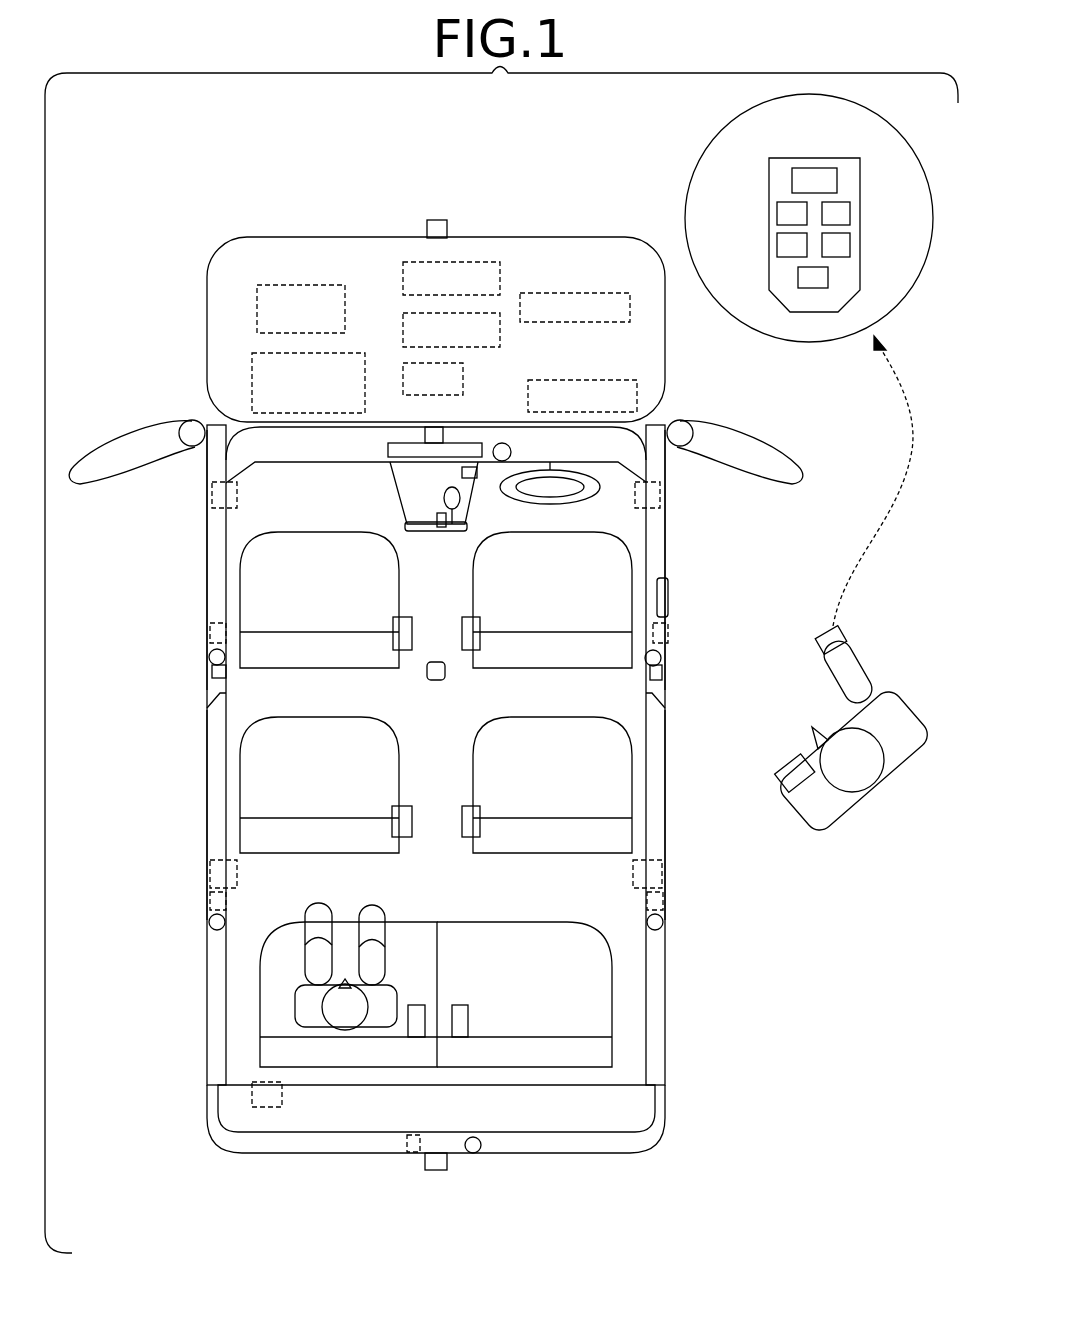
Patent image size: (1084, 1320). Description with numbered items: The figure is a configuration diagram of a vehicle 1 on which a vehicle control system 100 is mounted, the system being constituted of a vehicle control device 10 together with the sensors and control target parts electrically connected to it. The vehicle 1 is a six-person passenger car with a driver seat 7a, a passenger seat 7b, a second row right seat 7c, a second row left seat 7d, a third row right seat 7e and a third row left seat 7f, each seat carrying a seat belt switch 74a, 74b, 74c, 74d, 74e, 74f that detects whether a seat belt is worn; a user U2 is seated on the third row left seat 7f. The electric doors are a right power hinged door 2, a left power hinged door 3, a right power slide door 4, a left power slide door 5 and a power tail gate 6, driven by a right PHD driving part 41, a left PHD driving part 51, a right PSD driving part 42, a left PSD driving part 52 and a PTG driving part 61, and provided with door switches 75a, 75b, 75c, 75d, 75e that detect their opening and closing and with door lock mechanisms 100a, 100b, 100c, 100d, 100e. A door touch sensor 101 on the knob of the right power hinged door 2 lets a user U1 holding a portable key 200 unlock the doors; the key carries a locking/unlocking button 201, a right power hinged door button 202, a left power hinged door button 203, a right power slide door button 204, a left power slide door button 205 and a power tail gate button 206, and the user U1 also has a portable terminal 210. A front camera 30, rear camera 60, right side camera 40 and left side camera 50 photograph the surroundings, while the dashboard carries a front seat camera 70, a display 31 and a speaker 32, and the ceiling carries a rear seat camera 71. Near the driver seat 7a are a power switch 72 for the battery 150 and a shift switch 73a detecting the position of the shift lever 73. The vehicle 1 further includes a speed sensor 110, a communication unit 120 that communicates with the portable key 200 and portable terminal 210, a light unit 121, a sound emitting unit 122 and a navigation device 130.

The vehicle control system 100 is at (220, 194).
The vehicle 1 is at (548, 237).
The right power hinged door 2 is at (665, 560).
The left power hinged door 3 is at (207, 560).
The right power slide door 4 is at (665, 818).
The left power slide door 5 is at (207, 818).
The power tail gate 6 is at (602, 1132).
The driver seat 7a is at (473, 600).
The passenger seat 7b is at (399, 575).
The second row right seat 7c is at (473, 780).
The second row left seat 7d is at (399, 752).
The third row right seat 7e is at (535, 922).
The third row left seat 7f is at (395, 922).
The vehicle control device 10 is at (252, 376).
The front camera 30 is at (437, 218).
The display 31 is at (388, 450).
The speaker 32 is at (511, 451).
The right side camera 40 is at (662, 675).
The right power hinged door driving part 41 is at (660, 495).
The right power slide door driving part 42 is at (662, 873).
The left side camera 50 is at (212, 675).
The left power hinged door driving part 51 is at (212, 495).
The left power slide door driving part 52 is at (212, 873).
The rear camera 60 is at (436, 1170).
The power tail gate driving part 61 is at (268, 1107).
The front seat camera 70 is at (446, 430).
The rear seat camera 71 is at (436, 680).
The power switch 72 is at (475, 478).
The shift lever 73 is at (444, 497).
The shift switch 73a is at (437, 520).
The seat belt switch 74a is at (471, 650).
The seat belt switch 74b is at (406, 650).
The seat belt switch 74c is at (471, 837).
The seat belt switch 74d is at (407, 837).
The seat belt switch 74e is at (468, 1008).
The seat belt switch 74f is at (417, 1005).
The door switch 75a is at (660, 657).
The door switch 75b is at (212, 655).
The door switch 75c is at (663, 921).
The door switch 75d is at (212, 921).
The door switch 75e is at (474, 1153).
The door lock mechanism 100a is at (668, 633).
The door lock mechanism 100b is at (210, 633).
The door lock mechanism 100c is at (663, 900).
The door lock mechanism 100d is at (210, 900).
The door lock mechanism 100e is at (413, 1152).
The door touch sensor 101 is at (668, 596).
The speed sensor 110 is at (582, 380).
The communication unit 120 is at (570, 293).
The light unit 121 is at (410, 266).
The sound emitting unit 122 is at (410, 314).
The navigation device 130 is at (410, 363).
The battery 150 is at (308, 285).
The portable key 200 is at (822, 648).
The locking/unlocking button 201 is at (792, 180).
The right power hinged door button 202 is at (850, 213).
The left power hinged door button 203 is at (777, 213).
The right power slide door button 204 is at (850, 245).
The left power slide door button 205 is at (777, 245).
The power tail gate button 206 is at (798, 277).
The portable terminal 210 is at (777, 762).
The user U1 is at (862, 790).
The user U2 is at (295, 1005).